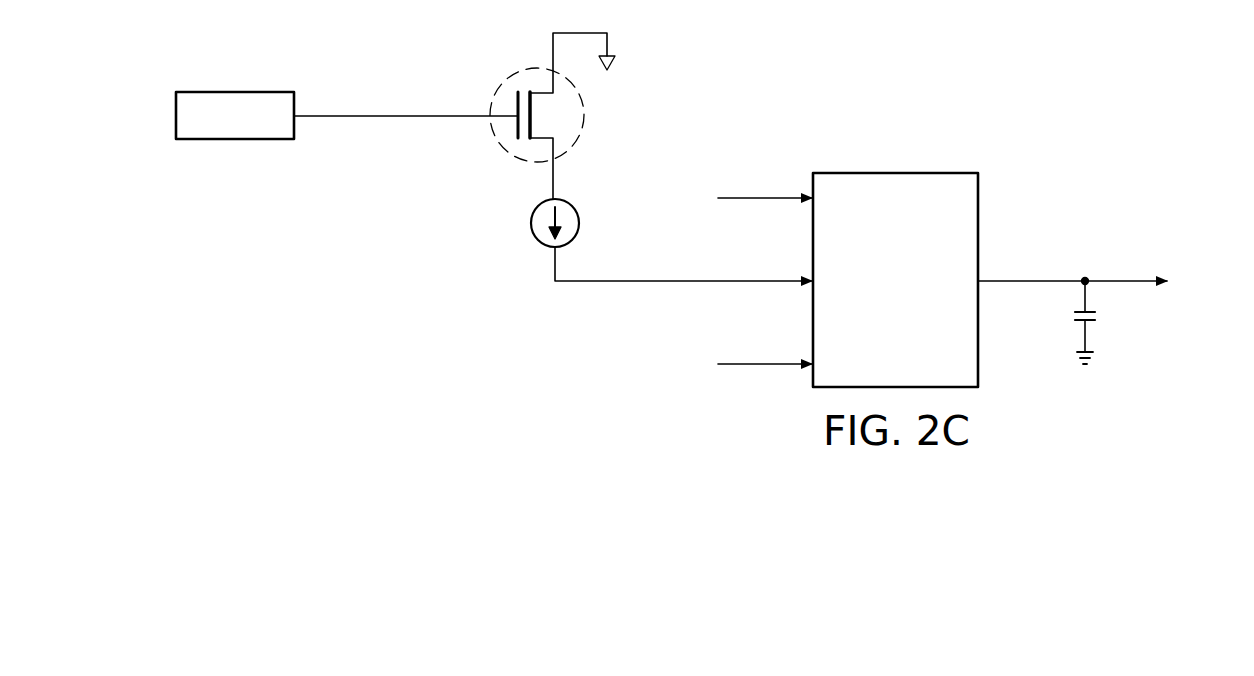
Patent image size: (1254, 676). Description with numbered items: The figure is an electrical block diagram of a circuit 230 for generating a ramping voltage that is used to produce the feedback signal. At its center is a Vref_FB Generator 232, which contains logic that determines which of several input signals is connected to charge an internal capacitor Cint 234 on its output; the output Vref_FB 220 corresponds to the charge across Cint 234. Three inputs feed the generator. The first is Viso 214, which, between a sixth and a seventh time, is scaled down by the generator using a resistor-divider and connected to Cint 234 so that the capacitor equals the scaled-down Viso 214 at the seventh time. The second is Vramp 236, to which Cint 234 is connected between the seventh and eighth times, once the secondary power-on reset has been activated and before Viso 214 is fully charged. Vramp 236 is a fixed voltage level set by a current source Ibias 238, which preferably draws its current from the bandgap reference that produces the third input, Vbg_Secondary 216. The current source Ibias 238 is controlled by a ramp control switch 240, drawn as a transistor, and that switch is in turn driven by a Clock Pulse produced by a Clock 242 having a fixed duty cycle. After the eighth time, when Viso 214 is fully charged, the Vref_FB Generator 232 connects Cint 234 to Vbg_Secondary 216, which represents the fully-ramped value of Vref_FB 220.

The circuit 230 is at (1038, 66).
The Clock 242 is at (234, 92).
The ramp control switch 240 is at (527, 68).
The current source Ibias 238 is at (530, 222).
The Vramp 236 is at (767, 282).
The Viso 214 is at (768, 198).
The Vbg_Secondary 216 is at (767, 365).
The Vref_FB Generator 232 is at (918, 330).
The Vref_FB 220 is at (1120, 281).
The internal capacitor Cint 234 is at (1072, 317).